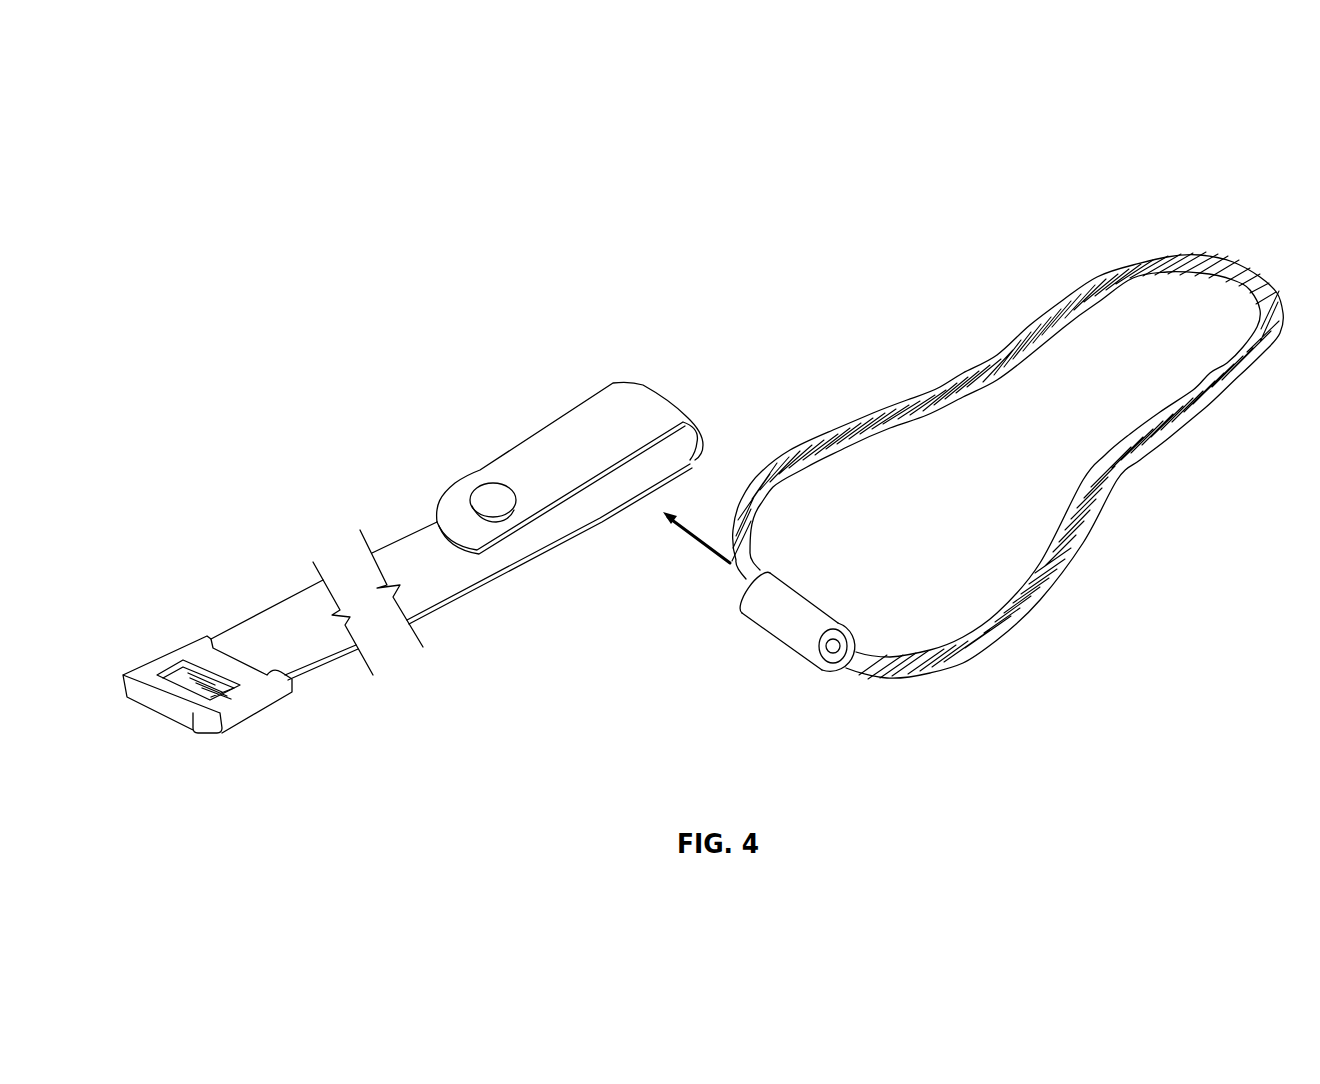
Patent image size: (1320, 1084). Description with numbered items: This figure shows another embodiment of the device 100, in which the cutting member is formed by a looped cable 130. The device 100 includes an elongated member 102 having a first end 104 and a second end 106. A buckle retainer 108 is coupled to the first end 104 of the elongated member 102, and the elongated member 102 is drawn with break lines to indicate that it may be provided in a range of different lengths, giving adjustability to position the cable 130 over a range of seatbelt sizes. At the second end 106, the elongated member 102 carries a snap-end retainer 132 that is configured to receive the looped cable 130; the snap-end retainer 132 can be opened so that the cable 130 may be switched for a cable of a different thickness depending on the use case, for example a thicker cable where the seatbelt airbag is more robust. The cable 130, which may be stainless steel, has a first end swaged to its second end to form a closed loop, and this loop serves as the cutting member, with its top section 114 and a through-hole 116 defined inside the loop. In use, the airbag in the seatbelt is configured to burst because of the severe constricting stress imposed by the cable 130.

The device 100 is at (1160, 160).
The elongated member 102 is at (447, 582).
The first end 104 is at (328, 688).
The second end 106 is at (650, 366).
The buckle retainer 108 is at (223, 725).
The top section 114 is at (1103, 266).
The through-hole 116 is at (993, 415).
The cable 130 is at (1023, 340).
The snap-end retainer 132 is at (520, 507).